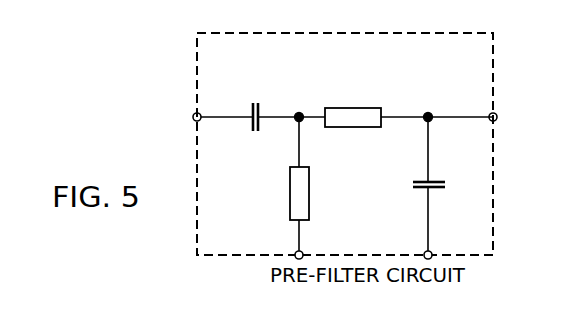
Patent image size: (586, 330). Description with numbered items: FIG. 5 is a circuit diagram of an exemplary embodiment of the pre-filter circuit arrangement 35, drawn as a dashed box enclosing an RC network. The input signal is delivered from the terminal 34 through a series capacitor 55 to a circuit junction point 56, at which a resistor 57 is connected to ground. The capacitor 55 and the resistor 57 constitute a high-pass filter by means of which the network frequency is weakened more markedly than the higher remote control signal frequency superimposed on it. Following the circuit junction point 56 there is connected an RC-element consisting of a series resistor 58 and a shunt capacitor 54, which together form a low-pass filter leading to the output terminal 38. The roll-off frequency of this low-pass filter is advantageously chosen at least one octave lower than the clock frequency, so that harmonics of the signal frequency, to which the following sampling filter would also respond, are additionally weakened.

The pre-filter circuit arrangement 35 is at (393, 13).
The terminal 34 is at (194, 120).
The output terminal 38 is at (508, 106).
The capacitor 55 is at (257, 101).
The circuit junction point 56 is at (301, 112).
The resistor 58 is at (357, 90).
The resistor 57 is at (290, 183).
The capacitor 54 is at (433, 181).